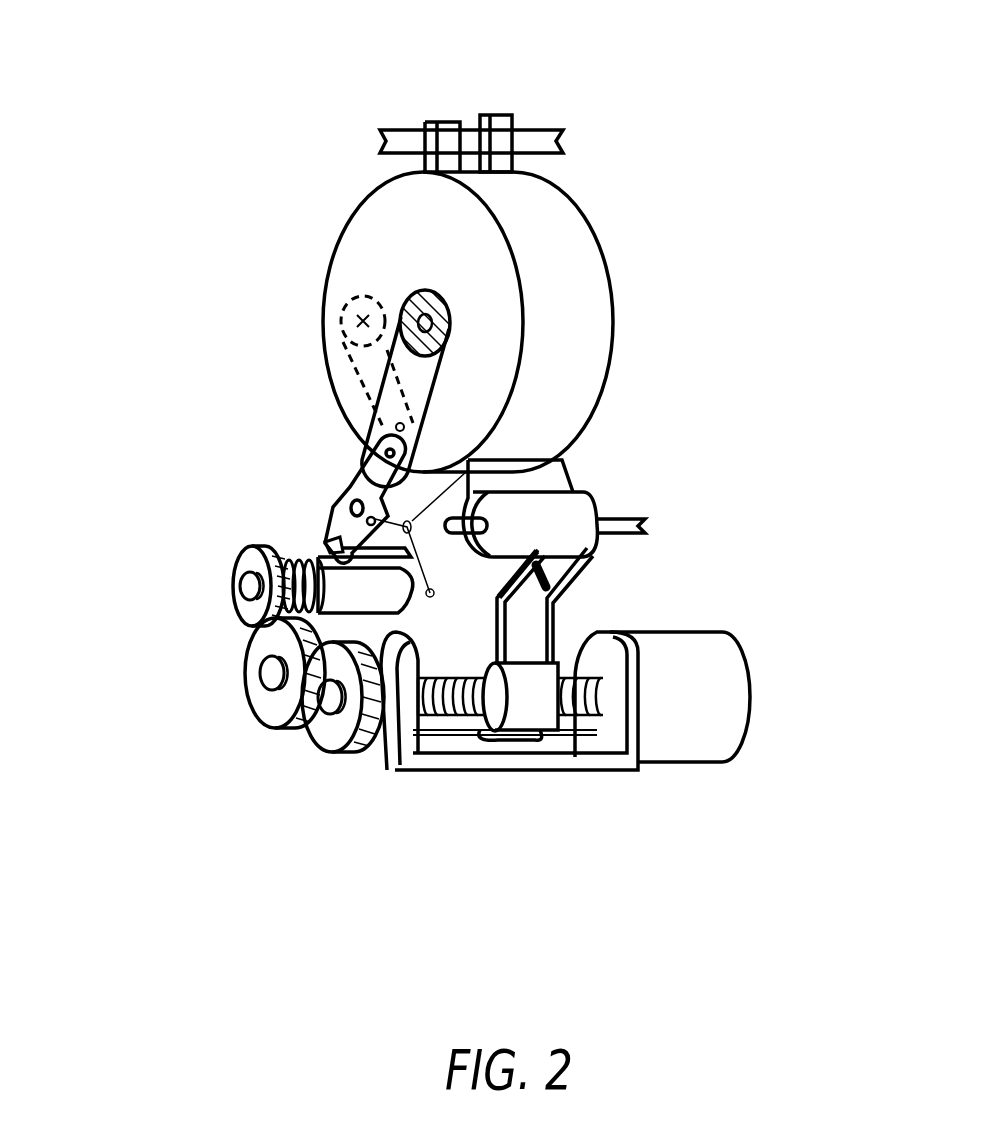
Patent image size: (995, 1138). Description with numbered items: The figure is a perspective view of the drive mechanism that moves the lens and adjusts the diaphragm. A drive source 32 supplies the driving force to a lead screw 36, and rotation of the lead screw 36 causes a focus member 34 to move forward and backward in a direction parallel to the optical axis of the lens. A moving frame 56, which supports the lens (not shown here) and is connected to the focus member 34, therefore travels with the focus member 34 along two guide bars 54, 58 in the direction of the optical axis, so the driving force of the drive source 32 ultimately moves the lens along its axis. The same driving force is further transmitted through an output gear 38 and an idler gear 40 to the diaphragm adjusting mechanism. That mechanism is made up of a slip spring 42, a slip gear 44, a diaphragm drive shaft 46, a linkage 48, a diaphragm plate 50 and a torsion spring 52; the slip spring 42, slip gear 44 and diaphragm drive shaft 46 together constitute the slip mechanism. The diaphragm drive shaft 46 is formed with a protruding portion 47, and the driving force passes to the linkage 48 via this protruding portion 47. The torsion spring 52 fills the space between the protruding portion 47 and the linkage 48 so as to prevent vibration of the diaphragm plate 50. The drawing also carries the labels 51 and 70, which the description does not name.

The drive source 32 is at (677, 748).
The focus member 34 is at (530, 717).
The lead screw 36 is at (455, 717).
The output gear 38 is at (337, 730).
The idler gear 40 is at (262, 700).
The slip spring 42 is at (288, 558).
The slip gear 44 is at (243, 560).
The diaphragm drive shaft 46 is at (300, 560).
The protruding portion 47 is at (318, 542).
The linkage 48 is at (358, 490).
The diaphragm plate 50 is at (340, 317).
The hub 51 is at (452, 338).
The torsion spring 52 is at (480, 457).
The guide bar 54 is at (625, 517).
The moving frame 56 is at (583, 265).
The guide bar 58 is at (536, 137).
The lever arm 70 is at (383, 402).